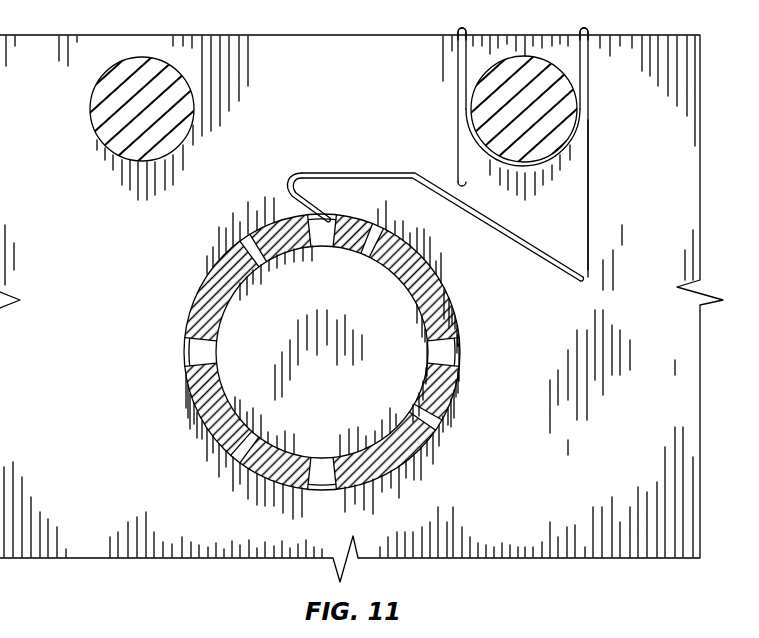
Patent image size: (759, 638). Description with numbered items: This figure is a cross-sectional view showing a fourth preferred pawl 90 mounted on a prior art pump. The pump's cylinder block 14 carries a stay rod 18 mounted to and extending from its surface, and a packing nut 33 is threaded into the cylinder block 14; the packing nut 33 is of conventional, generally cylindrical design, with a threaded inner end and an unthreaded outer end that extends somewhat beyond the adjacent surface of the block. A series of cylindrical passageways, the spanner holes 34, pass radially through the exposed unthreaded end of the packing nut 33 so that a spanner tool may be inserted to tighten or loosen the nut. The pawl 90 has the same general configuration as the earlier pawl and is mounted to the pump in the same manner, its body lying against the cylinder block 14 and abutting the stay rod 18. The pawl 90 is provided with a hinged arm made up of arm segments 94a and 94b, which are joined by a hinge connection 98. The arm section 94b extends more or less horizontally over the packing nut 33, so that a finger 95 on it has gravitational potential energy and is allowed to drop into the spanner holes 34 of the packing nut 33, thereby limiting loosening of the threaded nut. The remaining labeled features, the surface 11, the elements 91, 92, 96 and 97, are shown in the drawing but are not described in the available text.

The ground surface 11 is at (213, 31).
The cylinder block 14 is at (93, 247).
The stay rod 18 is at (100, 104).
The packing nut 33 is at (334, 364).
The spanner holes 34 is at (312, 235).
The pawl 90 is at (479, 155).
The right leg 91 is at (588, 118).
The leg upper ends 92 is at (473, 28).
The arm segment 94a is at (590, 186).
The arm section 94b is at (522, 255).
The finger 95 is at (317, 203).
The left leg 96 is at (457, 155).
The left leg lower end 97 is at (462, 183).
The hinge connection 98 is at (585, 279).